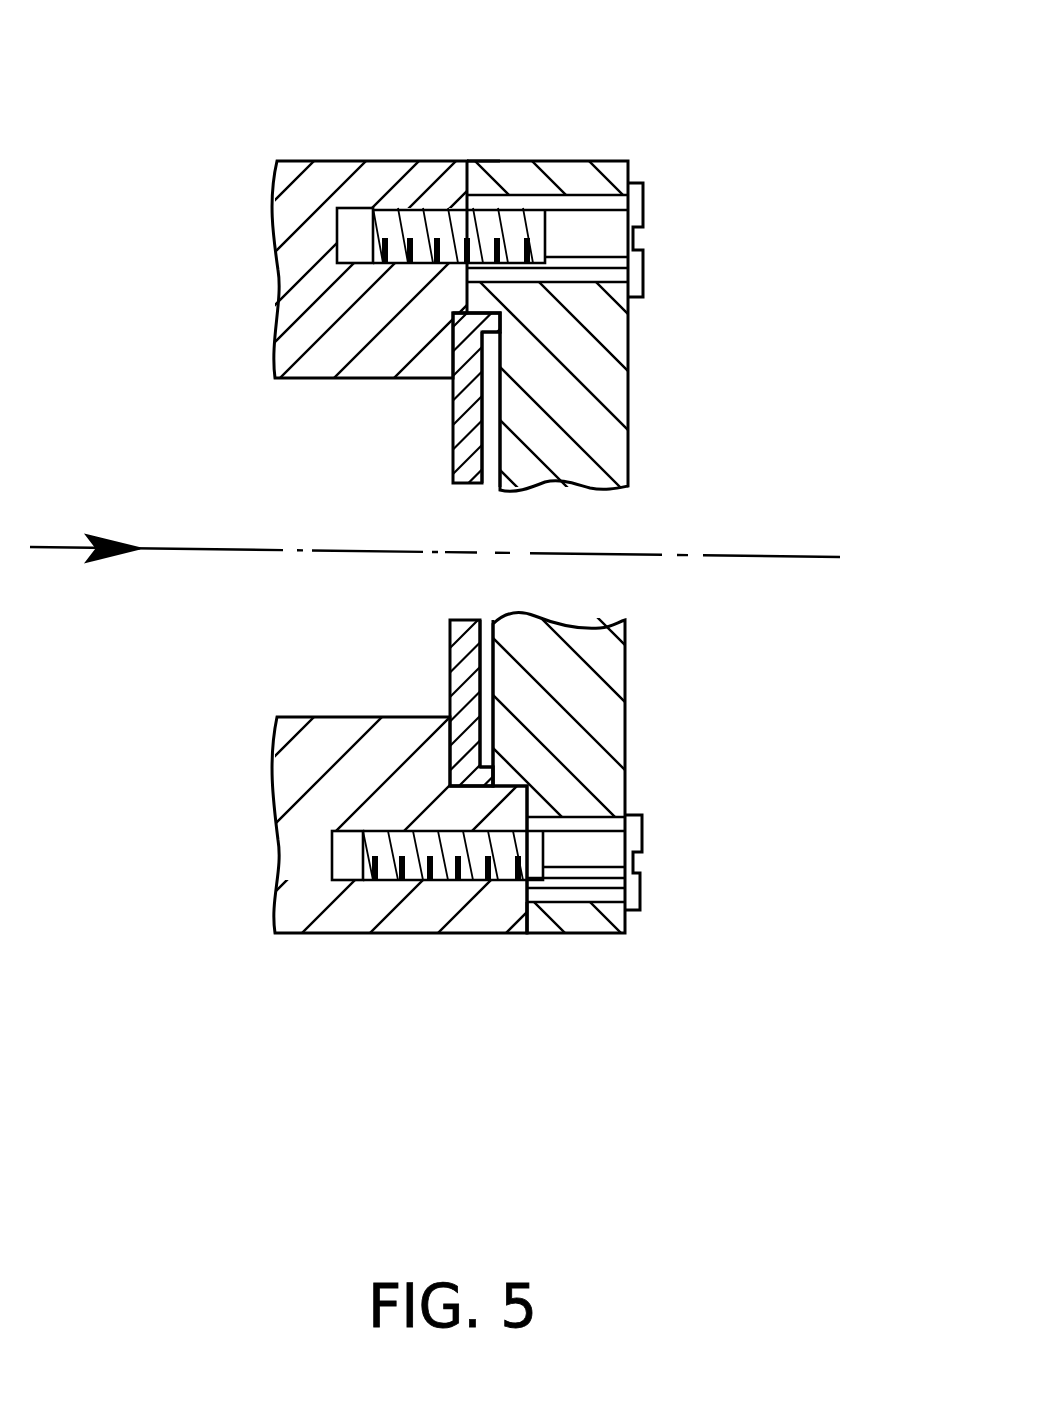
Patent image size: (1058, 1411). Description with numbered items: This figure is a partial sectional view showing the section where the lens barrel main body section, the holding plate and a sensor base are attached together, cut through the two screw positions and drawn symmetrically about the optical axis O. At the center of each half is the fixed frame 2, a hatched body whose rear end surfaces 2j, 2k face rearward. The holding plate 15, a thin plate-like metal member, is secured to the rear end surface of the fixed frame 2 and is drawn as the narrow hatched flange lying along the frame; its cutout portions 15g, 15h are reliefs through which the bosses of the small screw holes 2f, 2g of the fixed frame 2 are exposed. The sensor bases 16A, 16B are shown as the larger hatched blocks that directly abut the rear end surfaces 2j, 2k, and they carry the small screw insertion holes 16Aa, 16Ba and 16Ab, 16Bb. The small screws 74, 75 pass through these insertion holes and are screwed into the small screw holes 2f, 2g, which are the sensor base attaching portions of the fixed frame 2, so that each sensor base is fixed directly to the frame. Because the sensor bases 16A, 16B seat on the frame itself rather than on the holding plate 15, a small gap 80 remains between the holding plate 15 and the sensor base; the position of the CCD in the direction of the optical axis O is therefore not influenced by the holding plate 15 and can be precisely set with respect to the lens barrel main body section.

The fixed frame 2 is at (295, 273).
The small screw hole 2f is at (410, 210).
The small screw hole 2g is at (385, 880).
The rear end surface 2j is at (495, 165).
The rear end surface 2k is at (525, 915).
The holding plate 15 is at (452, 437).
The cutout portion 15g is at (452, 332).
The cutout portion 15h is at (468, 768).
The sensor base 16A is at (529, 705).
The sensor base 16B is at (627, 727).
The small screw insertion hole 16Aa is at (684, 312).
The small screw insertion hole 16Ba is at (530, 283).
The small screw insertion hole 16Ab is at (667, 947).
The small screw insertion hole 16Bb is at (573, 905).
The small screw 74 is at (647, 200).
The small screw 75 is at (642, 895).
The gap 80 is at (487, 647).
The optical axis O is at (86, 547).